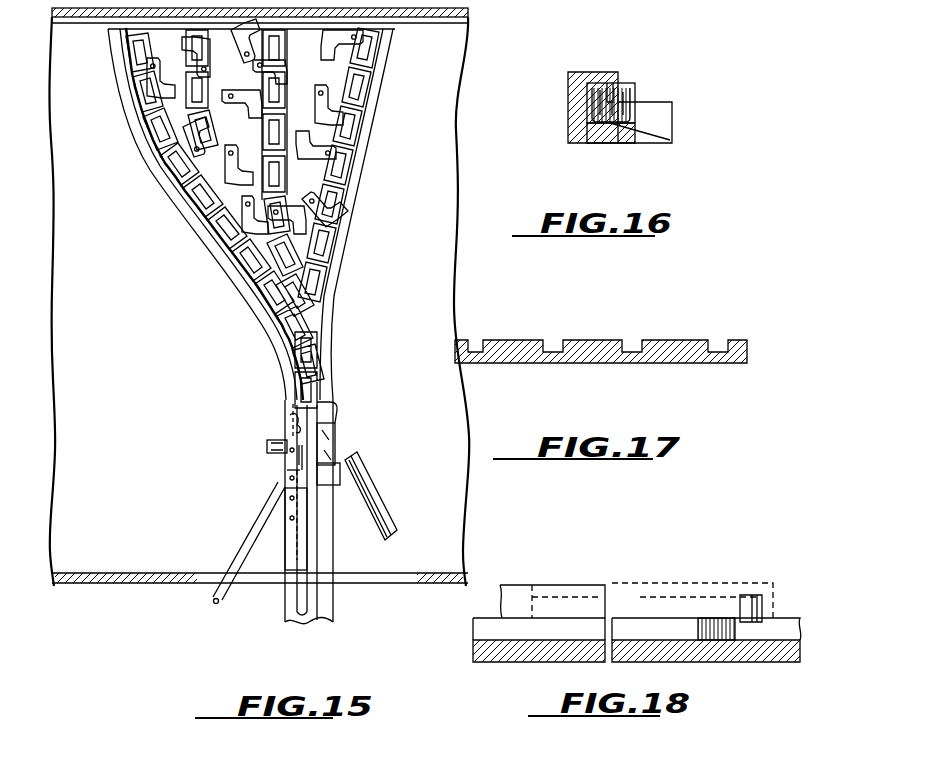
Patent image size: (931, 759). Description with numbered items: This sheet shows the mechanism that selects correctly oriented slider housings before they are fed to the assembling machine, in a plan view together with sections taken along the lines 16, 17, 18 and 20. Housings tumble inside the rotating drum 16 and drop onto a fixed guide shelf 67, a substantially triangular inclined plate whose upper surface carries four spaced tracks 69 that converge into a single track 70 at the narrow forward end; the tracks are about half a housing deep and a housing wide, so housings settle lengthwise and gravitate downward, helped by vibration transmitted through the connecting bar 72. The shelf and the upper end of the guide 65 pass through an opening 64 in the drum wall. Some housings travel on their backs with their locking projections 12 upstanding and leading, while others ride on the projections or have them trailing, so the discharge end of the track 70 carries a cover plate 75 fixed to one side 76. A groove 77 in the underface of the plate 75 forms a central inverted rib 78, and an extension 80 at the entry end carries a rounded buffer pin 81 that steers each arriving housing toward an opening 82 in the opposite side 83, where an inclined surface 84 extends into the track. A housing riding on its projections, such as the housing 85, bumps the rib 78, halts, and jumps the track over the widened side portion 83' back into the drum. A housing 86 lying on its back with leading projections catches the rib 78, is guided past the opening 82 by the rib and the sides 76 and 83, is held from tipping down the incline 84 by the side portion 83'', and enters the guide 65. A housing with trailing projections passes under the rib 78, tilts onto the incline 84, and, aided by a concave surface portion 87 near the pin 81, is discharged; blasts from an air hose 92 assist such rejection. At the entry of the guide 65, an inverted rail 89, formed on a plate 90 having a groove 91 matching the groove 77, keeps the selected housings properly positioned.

In FIG. 15, the locking projections 12 is at (345, 312).
In FIG. 15, the drum 16 is at (285, 428).
In FIG. 15, the section line 17— 17 is at (100, 35).
In FIG. 15, the section line 18— 18 is at (319, 401).
In FIG. 15, the section line 20— 20 is at (215, 455).
In FIG. 15, the opening 64 is at (413, 577).
In FIG. 15, the guide 65 is at (300, 631).
In FIG. 18, the guide 65 is at (488, 669).
In FIG. 15, the guide shelf 67 is at (371, 141).
In FIG. 17, the guide shelf 67 is at (760, 350).
In FIG. 15, the tracks 69 is at (120, 45).
In FIG. 17, the tracks 69 is at (472, 350).
In FIG. 15, the single track 70 is at (320, 330).
In FIG. 15, the connecting bar 72 is at (213, 600).
In FIG. 15, the cover plate 75 is at (287, 475).
In FIG. 16, the cover plate 75 is at (613, 82).
In FIG. 15, the side 76 is at (285, 365).
In FIG. 16, the side 76 is at (572, 117).
In FIG. 18, the side 76 is at (778, 612).
In FIG. 15, the groove 77 is at (300, 455).
In FIG. 16, the groove 77 is at (610, 77).
In FIG. 18, the groove 77 is at (645, 600).
In FIG. 15, the rib 78 is at (300, 468).
In FIG. 16, the rib 78 is at (617, 83).
In FIG. 18, the rib 78 is at (700, 598).
In FIG. 15, the extension 80 is at (290, 420).
In FIG. 18, the extension 80 is at (757, 590).
In FIG. 15, the pin 81 is at (297, 400).
In FIG. 16, the pin 81 is at (587, 88).
In FIG. 18, the pin 81 is at (752, 605).
In FIG. 15, the opening 82 is at (333, 433).
In FIG. 16, the opening 82 is at (670, 118).
In FIG. 15, the side 83 is at (351, 370).
In FIG. 16, the side 83 is at (685, 85).
In FIG. 15, the widened side portion 83' is at (369, 393).
In FIG. 15, the side portion 83'' is at (358, 475).
In FIG. 16, the inclined surface 84 is at (657, 135).
In FIG. 18, the inclined surface 84 is at (706, 640).
In FIG. 15, the housing 85 is at (293, 333).
In FIG. 15, the housing 86 is at (318, 360).
In FIG. 15, the concave surface portion 87 is at (267, 445).
In FIG. 18, the concave surface portion 87 is at (728, 632).
In FIG. 15, the inverted rail 89 is at (308, 590).
In FIG. 18, the inverted rail 89 is at (508, 596).
In FIG. 15, the plate 90 is at (287, 528).
In FIG. 18, the plate 90 is at (561, 586).
In FIG. 15, the groove 91 is at (310, 513).
In FIG. 18, the groove 91 is at (584, 600).
In FIG. 15, the air hose 92 is at (385, 527).